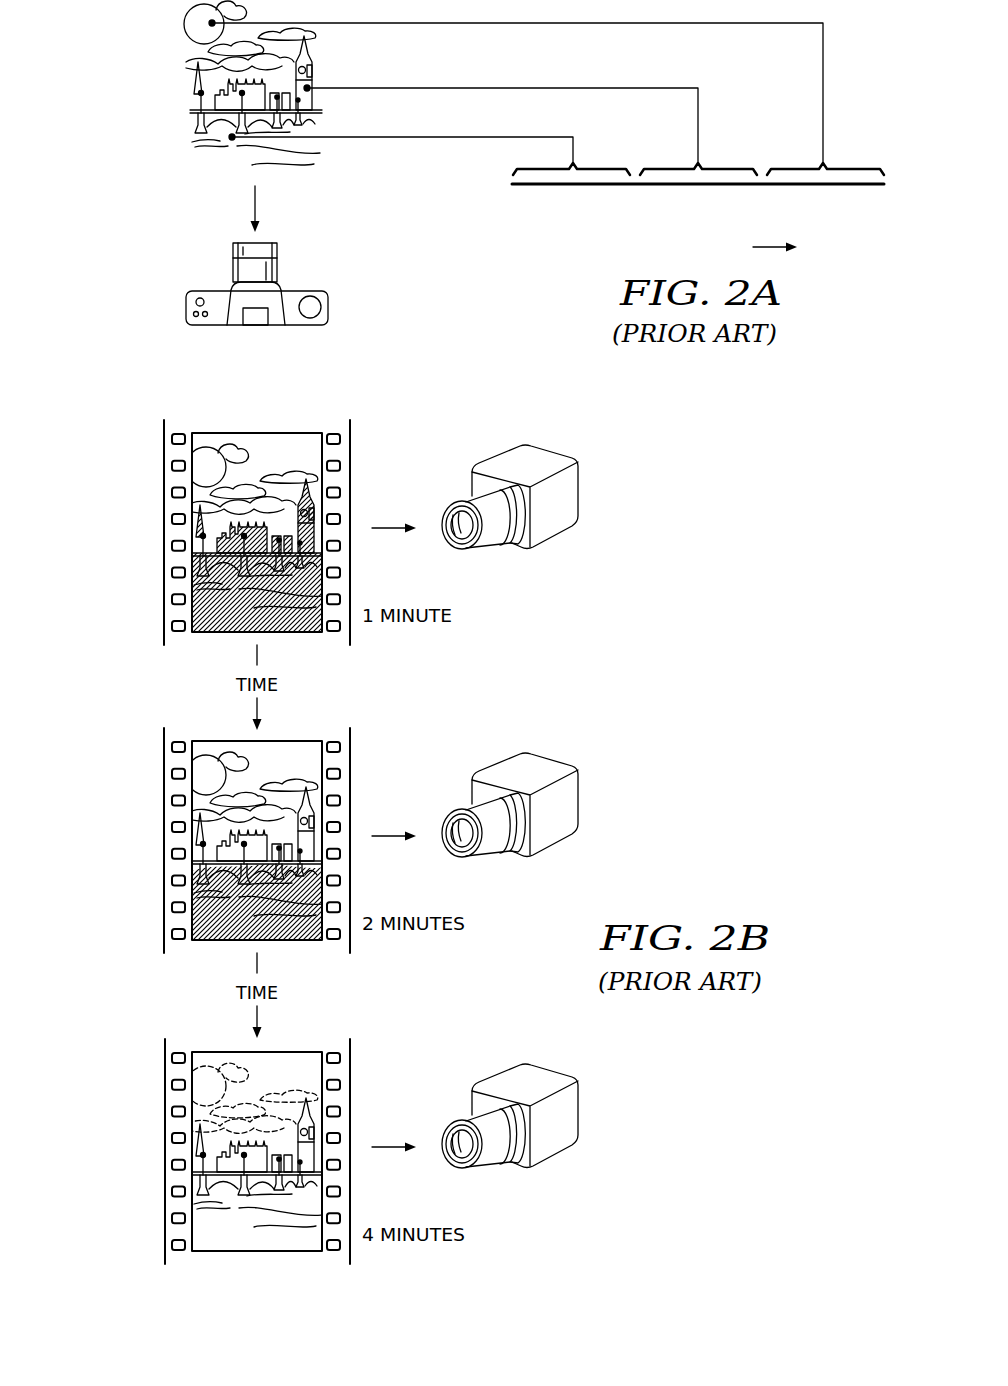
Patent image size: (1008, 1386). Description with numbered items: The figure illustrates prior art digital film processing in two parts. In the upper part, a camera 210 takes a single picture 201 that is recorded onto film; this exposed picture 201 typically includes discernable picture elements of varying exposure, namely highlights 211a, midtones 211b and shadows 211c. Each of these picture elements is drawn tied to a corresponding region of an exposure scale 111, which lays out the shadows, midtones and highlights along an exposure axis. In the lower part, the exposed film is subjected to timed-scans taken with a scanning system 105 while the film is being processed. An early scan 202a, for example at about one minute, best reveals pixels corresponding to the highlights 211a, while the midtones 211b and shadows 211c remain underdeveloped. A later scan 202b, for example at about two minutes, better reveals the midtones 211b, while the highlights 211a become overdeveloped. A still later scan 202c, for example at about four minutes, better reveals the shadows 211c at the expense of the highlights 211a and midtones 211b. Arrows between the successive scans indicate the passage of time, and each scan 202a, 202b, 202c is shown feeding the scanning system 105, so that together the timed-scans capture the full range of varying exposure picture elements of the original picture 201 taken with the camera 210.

In FIG. 2A, the picture 201 is at (192, 72).
In FIG. 2A, the highlights 211a is at (212, 23).
In FIG. 2B, the highlights 211a is at (192, 453).
In FIG. 2A, the midtones 211b is at (307, 88).
In FIG. 2B, the midtones 211b is at (322, 503).
In FIG. 2A, the shadows 211c is at (232, 140).
In FIG. 2B, the shadows 211c is at (225, 632).
In FIG. 2A, the camera 210 is at (186, 304).
In FIG. 2A, the film / exposure scale 111 is at (517, 186).
In FIG. 2B, the film / exposure scale 111 is at (350, 451).
In FIG. 2B, the early scan 202a is at (134, 523).
In FIG. 2B, the second exposure frame (2 minutes) 202b is at (134, 831).
In FIG. 2B, the third exposure frame (4 minutes) 202c is at (134, 1142).
In FIG. 2B, the camera 105 is at (578, 503).